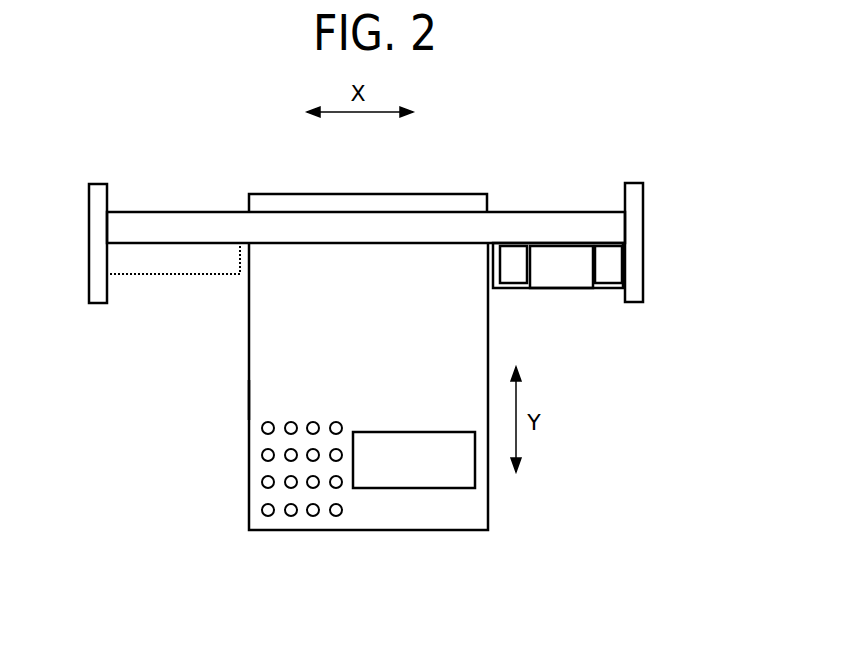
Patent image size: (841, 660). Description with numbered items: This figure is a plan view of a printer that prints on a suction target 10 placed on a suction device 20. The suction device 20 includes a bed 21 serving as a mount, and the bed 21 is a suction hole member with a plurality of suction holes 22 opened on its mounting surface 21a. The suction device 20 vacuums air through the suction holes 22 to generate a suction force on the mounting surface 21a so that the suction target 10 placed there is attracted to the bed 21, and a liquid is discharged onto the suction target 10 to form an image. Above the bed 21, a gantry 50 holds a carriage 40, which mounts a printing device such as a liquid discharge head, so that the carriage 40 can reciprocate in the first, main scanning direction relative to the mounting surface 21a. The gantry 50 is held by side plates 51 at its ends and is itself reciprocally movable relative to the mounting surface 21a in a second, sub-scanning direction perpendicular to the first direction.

The suction target 10 is at (410, 478).
The suction device 20 is at (326, 386).
The bed 21 is at (249, 362).
The mounting surface 21a is at (265, 398).
The suction holes 22 is at (291, 513).
The carriage 40 is at (557, 258).
The gantry 50 is at (327, 230).
The side plates 51 is at (98, 244).